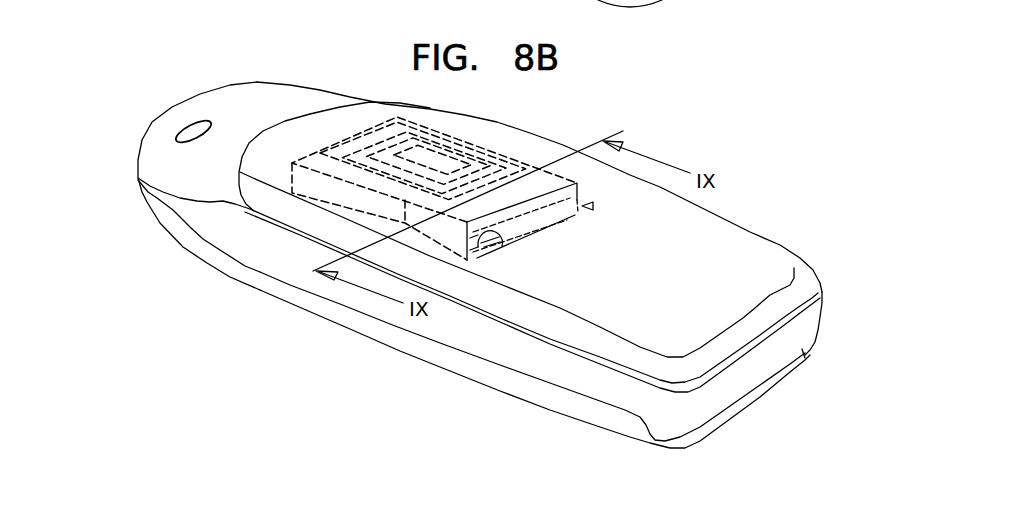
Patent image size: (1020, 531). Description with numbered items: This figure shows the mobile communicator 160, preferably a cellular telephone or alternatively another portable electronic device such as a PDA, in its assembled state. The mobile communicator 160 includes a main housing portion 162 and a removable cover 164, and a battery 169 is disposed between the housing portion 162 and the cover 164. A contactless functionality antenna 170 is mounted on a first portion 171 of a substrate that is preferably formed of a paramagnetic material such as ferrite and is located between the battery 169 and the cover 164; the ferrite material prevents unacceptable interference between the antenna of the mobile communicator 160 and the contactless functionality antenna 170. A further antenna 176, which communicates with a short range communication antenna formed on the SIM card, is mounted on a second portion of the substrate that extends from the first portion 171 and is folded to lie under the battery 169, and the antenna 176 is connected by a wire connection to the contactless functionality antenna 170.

The mobile communicator 160 is at (168, 84).
The main housing portion 162 is at (222, 225).
The removable cover 164 is at (770, 249).
The battery 169 is at (592, 190).
The contactless functionality antenna 170 is at (362, 150).
The first portion of substrate 171 is at (318, 152).
The antenna 176 is at (497, 234).